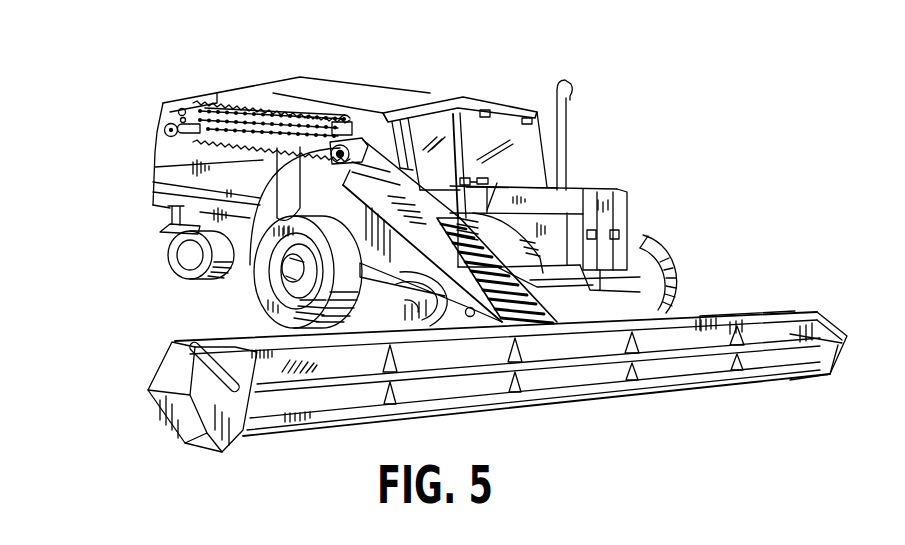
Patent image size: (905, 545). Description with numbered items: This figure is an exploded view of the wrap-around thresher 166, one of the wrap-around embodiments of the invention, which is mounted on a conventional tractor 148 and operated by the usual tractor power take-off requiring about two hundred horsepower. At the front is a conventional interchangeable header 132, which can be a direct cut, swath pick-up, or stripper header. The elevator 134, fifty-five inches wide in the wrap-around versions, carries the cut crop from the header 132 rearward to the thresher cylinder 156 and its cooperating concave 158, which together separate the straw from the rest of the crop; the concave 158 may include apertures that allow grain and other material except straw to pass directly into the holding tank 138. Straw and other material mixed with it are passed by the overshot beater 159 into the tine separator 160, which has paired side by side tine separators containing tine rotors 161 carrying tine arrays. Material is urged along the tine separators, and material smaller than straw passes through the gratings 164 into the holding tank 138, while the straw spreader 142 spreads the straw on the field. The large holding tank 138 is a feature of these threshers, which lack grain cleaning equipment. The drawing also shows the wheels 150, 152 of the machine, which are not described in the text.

The header 132 is at (587, 360).
The elevator 134 is at (665, 268).
The holding tank 138 is at (173, 170).
The straw spreader 142 is at (160, 233).
The tractor 148 is at (563, 190).
The cart rear wheel 150 is at (267, 304).
The cart front wheel 152 is at (177, 266).
The thresher cylinder 156 is at (350, 145).
The concave 158 is at (258, 252).
The overshot beater 159 is at (347, 121).
The tine separator 160 is at (240, 94).
The tine rotors 161 is at (196, 130).
The gratings 164 is at (162, 150).
The wrap-around thresher 166 is at (636, 177).